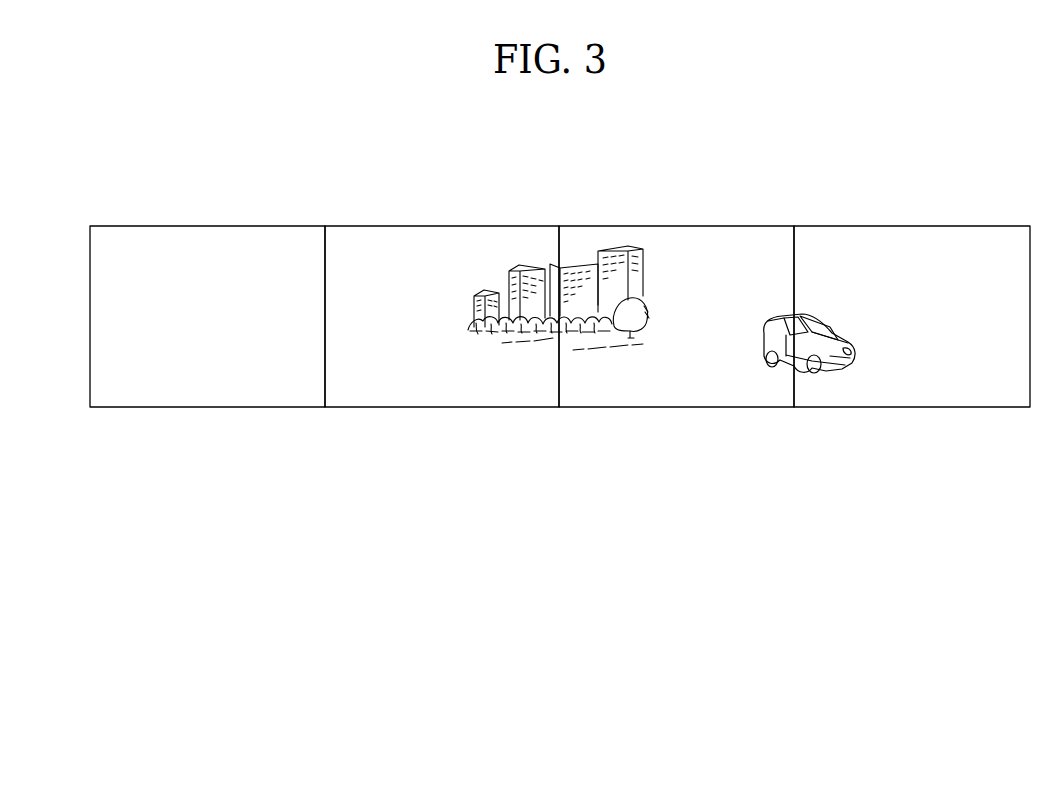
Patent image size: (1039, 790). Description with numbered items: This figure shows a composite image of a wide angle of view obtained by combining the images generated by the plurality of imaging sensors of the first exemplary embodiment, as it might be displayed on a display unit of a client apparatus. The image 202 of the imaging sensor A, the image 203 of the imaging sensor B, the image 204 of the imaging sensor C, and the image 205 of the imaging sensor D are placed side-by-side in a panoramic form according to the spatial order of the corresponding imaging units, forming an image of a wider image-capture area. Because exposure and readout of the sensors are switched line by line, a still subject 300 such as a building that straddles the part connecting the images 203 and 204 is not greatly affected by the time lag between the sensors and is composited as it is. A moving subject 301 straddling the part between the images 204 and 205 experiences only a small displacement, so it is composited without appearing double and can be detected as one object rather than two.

The image of the imaging sensor A 202 is at (212, 225).
The image of the imaging sensor B 203 is at (436, 225).
The image of the imaging sensor C 204 is at (693, 225).
The image of the imaging sensor D 205 is at (915, 225).
The still subject 300 is at (604, 251).
The moving subject 301 is at (833, 331).